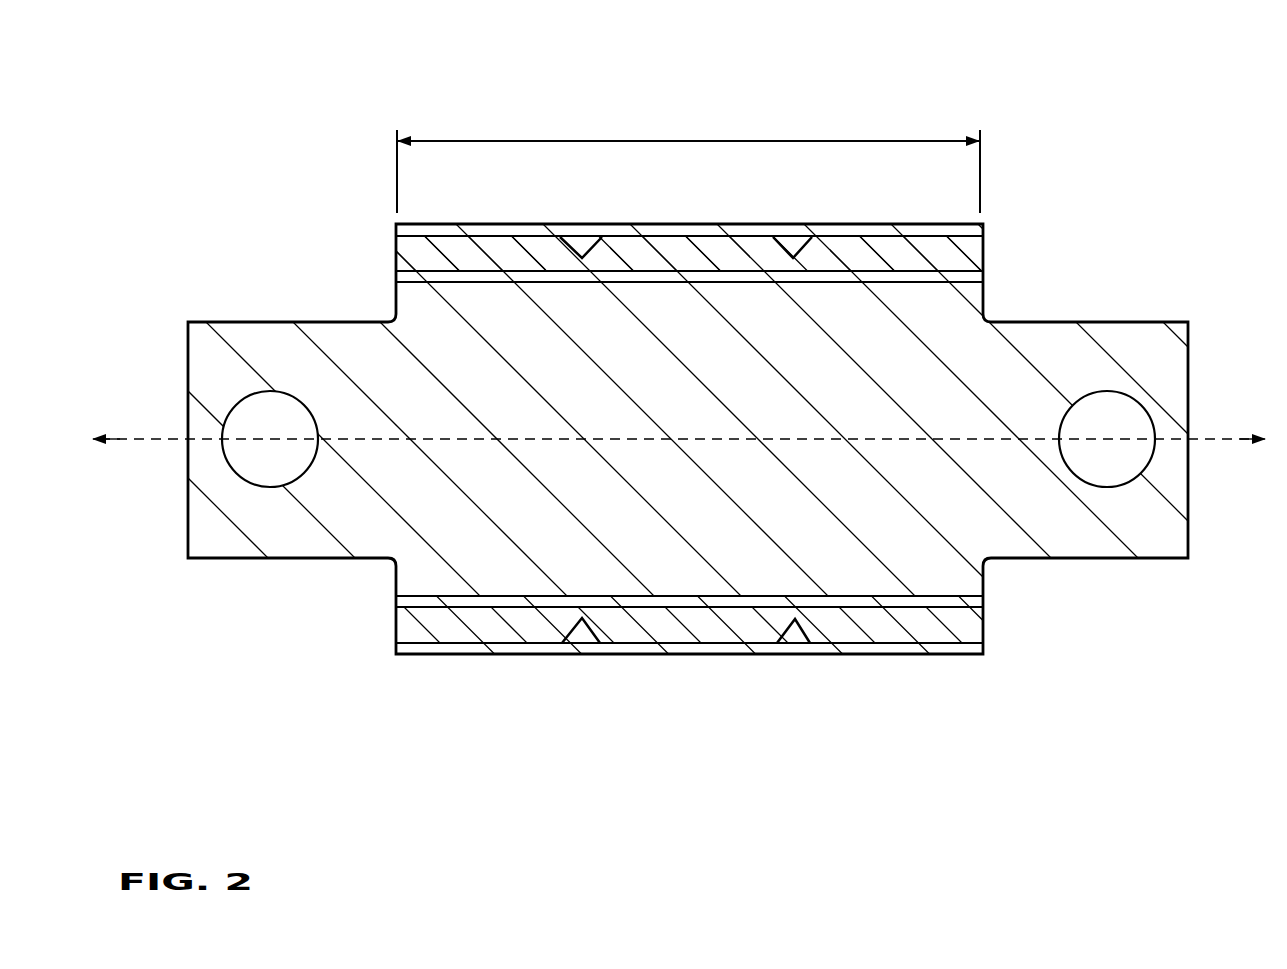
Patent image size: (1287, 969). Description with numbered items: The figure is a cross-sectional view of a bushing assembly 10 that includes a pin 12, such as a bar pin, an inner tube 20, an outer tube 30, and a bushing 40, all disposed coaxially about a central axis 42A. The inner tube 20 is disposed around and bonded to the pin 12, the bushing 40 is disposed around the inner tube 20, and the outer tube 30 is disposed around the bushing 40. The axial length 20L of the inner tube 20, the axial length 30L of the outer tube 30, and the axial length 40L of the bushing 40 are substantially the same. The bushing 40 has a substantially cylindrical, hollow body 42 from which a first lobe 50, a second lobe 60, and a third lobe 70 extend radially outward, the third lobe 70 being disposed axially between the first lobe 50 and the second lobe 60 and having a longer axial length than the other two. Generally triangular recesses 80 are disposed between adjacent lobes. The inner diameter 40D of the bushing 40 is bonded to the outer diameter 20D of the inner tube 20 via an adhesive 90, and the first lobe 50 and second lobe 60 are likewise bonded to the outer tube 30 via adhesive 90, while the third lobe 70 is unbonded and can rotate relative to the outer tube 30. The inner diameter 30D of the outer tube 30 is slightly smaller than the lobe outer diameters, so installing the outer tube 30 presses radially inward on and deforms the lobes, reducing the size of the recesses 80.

The bushing assembly 10 is at (312, 150).
The pin 12 is at (277, 310).
The body 42 is at (390, 257).
The central axis 42A is at (153, 448).
The inner tube 20 is at (988, 275).
The outer tube 30 is at (450, 220).
The bushing 40 is at (990, 237).
The first lobe 50 is at (495, 252).
The second lobe 60 is at (887, 250).
The third lobe 70 is at (667, 253).
The recess 80 is at (580, 237).
The adhesive 90 is at (457, 645).
The outer diameter of the inner tube 20D is at (418, 604).
The inner diameter of the outer tube 30D is at (682, 657).
The inner diameter of the bushing 40D is at (923, 272).
The axial length of the inner tube 20L is at (820, 138).
The axial length of the outer tube 30L is at (697, 134).
The axial length of the bushing 40L is at (722, 134).